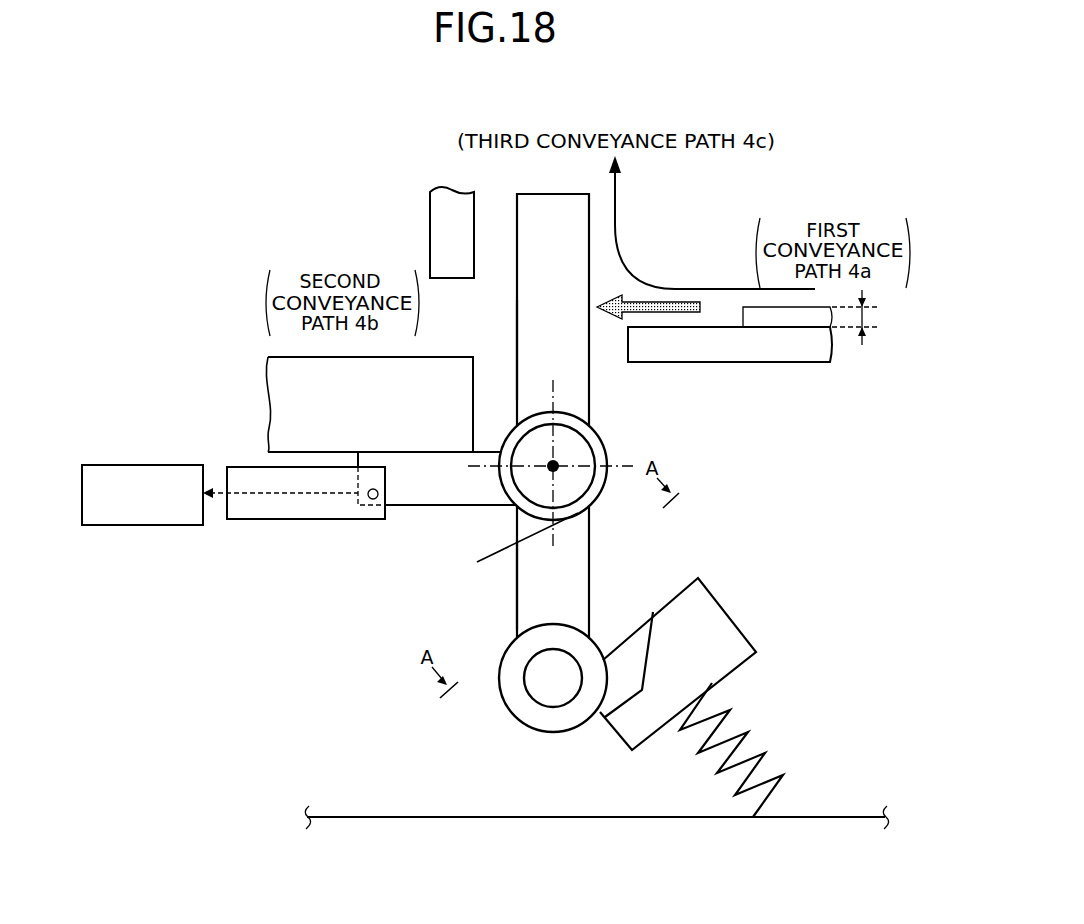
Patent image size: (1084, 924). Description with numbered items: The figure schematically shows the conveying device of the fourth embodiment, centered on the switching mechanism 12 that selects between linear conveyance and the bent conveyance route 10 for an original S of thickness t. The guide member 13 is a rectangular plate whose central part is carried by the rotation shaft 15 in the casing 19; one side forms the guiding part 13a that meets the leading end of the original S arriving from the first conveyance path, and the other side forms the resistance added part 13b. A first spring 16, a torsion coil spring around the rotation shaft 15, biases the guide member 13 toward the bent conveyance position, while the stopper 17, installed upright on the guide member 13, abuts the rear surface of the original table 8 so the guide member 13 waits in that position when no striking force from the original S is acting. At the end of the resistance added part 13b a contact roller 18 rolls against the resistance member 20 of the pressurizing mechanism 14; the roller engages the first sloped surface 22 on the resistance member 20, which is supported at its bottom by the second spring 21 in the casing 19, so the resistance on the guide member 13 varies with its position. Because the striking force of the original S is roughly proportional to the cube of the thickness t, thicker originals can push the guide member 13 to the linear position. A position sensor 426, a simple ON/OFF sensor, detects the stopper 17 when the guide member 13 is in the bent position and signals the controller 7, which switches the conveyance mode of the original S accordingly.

The switching mechanism 12 is at (388, 118).
The guide member 13 is at (598, 227).
The guiding part 13a is at (517, 340).
The resistance added part 13b is at (518, 590).
The bent conveyance route 10 is at (673, 289).
The original table 8 is at (428, 356).
The controller 7 is at (141, 465).
The first spring 16 is at (593, 429).
The rotation shaft 15 is at (592, 449).
The stopper 17 is at (435, 505).
The position sensor 426 is at (373, 500).
The contact roller 18 is at (549, 733).
The pressurizing mechanism 14 is at (741, 697).
The resistance member 20 is at (740, 609).
The second spring 21 is at (757, 739).
The first sloped surface 22 is at (648, 648).
The casing 19 is at (480, 817).
The original S is at (752, 307).
The thickness t is at (866, 317).